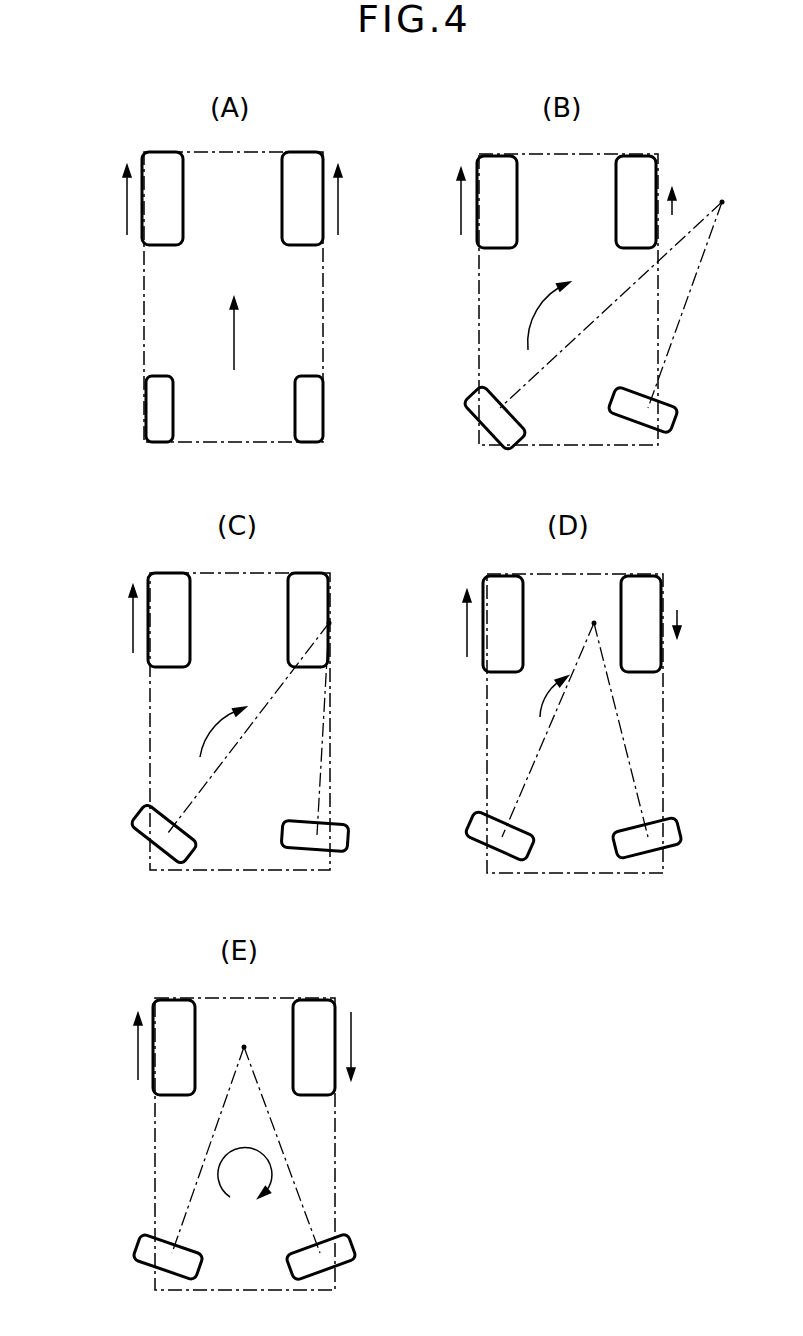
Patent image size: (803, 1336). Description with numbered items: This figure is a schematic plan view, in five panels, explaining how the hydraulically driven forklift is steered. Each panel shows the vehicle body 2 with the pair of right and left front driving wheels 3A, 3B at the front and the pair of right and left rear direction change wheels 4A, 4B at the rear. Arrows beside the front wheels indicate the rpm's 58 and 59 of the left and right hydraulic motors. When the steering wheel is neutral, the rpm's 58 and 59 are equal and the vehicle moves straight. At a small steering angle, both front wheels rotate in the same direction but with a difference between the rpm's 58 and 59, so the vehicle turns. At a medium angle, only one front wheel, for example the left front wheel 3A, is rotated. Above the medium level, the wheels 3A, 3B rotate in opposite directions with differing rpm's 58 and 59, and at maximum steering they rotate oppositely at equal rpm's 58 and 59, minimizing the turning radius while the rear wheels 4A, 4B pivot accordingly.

The vehicle body 2 is at (370, 721).
The left front wheel 3A is at (320, 598).
The right front wheel 3B is at (482, 598).
The left rear wheel 4A is at (302, 828).
The right rear wheel 4B is at (514, 828).
The rpm of left hydraulic motor 58 is at (259, 622).
The rpm of right hydraulic motor 59 is at (550, 596).